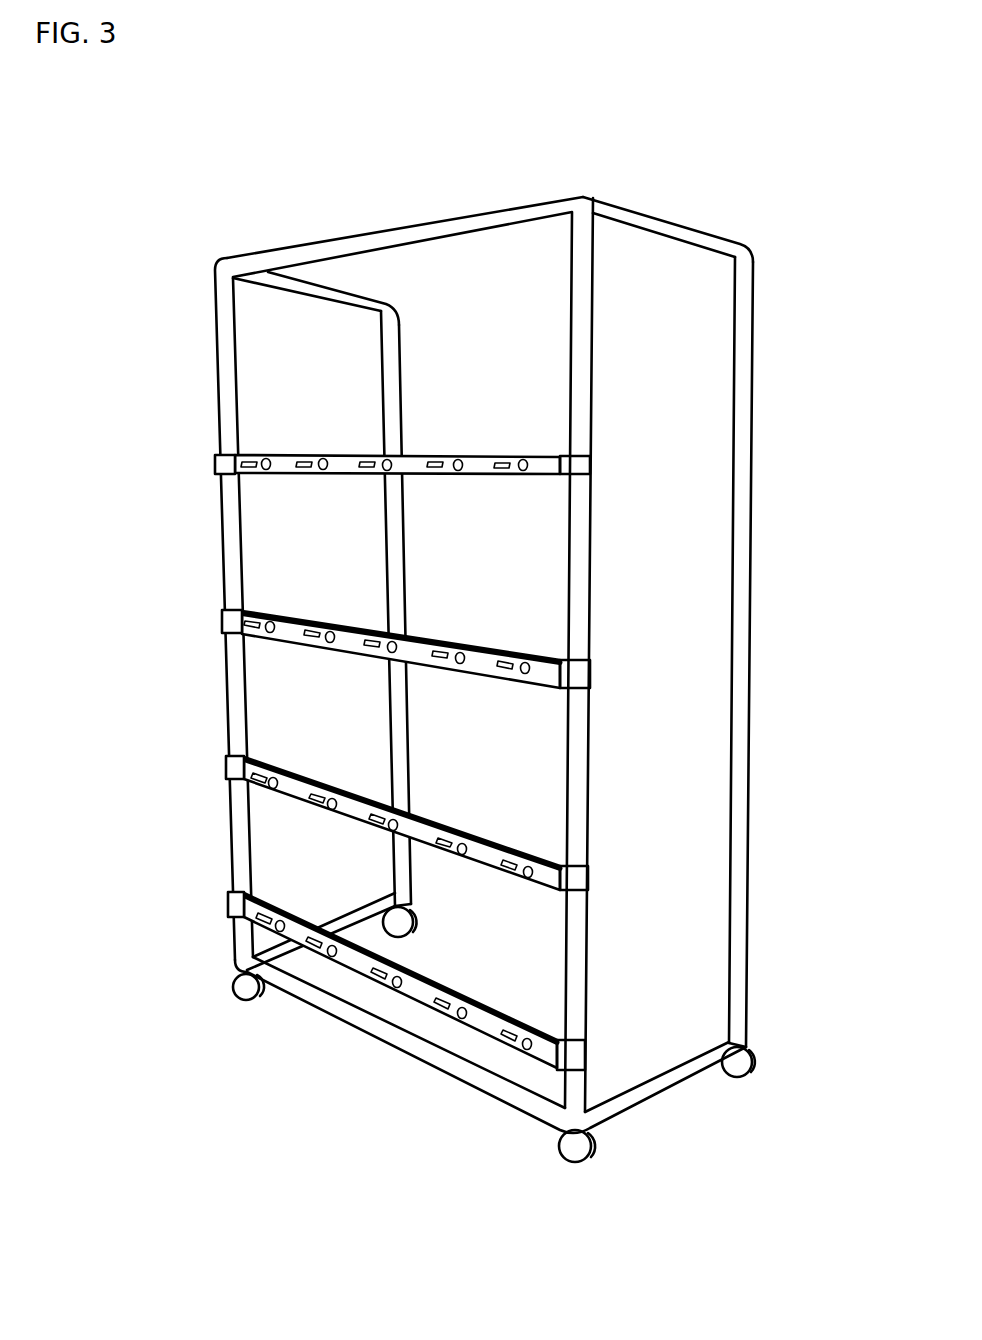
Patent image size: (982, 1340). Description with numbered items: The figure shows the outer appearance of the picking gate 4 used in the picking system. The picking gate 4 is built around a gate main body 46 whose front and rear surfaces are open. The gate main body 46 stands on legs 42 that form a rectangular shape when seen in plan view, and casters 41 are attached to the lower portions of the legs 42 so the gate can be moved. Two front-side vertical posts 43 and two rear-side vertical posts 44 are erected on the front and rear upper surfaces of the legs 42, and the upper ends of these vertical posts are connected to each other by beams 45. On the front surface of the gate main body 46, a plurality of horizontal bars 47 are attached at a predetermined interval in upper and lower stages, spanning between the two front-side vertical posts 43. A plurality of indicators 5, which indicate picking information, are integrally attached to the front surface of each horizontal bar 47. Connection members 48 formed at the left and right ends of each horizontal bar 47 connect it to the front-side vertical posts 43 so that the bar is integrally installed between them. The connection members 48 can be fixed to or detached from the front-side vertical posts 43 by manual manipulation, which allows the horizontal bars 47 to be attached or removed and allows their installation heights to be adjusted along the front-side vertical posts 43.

The picking gate 4 is at (797, 252).
The indicator 5 is at (266, 471).
The caster 41 is at (237, 990).
The leg 42 is at (655, 1092).
The front-side vertical post 43 is at (217, 355).
The rear-side vertical post 44 is at (401, 395).
The beam 45 is at (368, 232).
The gate main body 46 is at (683, 228).
The horizontal bar 47 is at (282, 455).
The connection member 48 is at (213, 468).